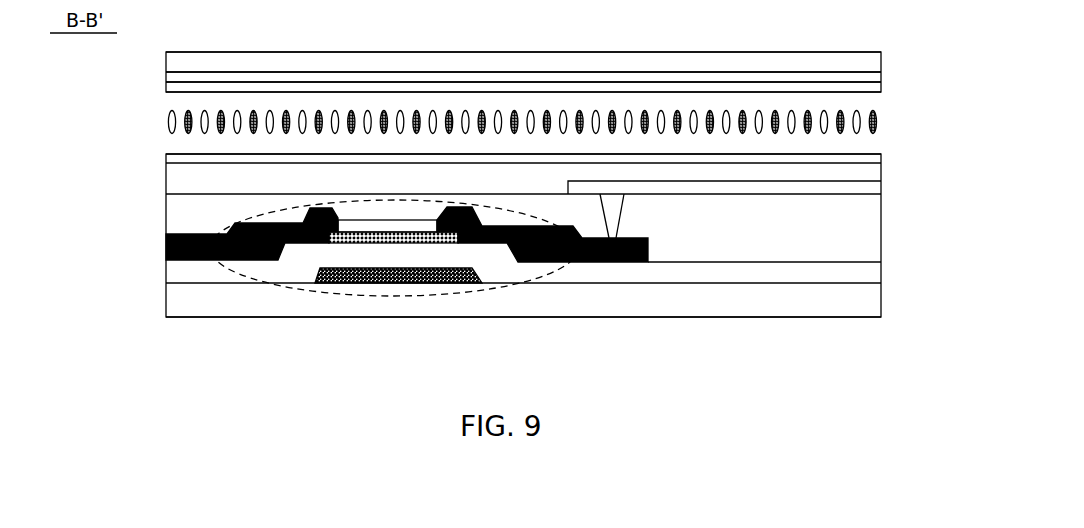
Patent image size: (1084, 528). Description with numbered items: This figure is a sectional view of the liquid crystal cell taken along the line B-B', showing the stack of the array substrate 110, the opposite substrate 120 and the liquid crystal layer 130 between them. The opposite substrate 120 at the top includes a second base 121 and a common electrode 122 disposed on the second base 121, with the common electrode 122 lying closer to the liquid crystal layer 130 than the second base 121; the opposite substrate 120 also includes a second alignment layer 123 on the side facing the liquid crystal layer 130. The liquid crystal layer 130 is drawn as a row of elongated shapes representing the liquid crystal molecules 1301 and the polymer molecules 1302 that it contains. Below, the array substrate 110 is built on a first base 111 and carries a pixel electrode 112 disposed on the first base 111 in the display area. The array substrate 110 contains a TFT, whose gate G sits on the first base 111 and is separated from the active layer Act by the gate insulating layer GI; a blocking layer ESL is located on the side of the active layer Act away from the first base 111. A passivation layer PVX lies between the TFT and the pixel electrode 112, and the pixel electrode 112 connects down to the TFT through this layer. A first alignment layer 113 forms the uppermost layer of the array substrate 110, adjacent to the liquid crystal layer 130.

The opposite substrate 120 is at (887, 52).
The second base 121 is at (166, 62).
The common electrode 122 is at (166, 77).
The second alignment layer 123 is at (166, 88).
The liquid crystal layer 130 is at (517, 126).
The liquid crystal molecules 1301 is at (169, 119).
The polymer molecules 1302 is at (184, 129).
The array substrate 110 is at (533, 251).
The first base 111 is at (875, 311).
The pixel electrode 112 is at (881, 190).
The first alignment layer 113 is at (881, 157).
The passivation layer PVX is at (875, 236).
The gate insulating layer GI is at (875, 278).
The element TFT is at (407, 277).
The gate G is at (465, 284).
The active layer Act is at (418, 244).
The blocking layer ESL is at (383, 232).